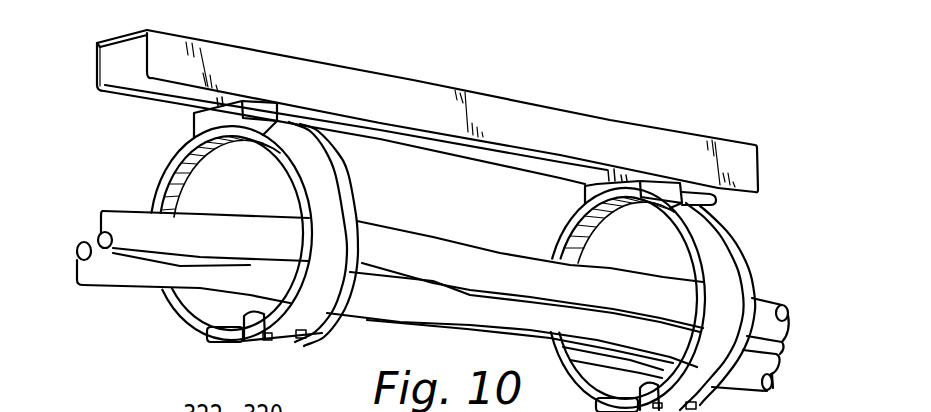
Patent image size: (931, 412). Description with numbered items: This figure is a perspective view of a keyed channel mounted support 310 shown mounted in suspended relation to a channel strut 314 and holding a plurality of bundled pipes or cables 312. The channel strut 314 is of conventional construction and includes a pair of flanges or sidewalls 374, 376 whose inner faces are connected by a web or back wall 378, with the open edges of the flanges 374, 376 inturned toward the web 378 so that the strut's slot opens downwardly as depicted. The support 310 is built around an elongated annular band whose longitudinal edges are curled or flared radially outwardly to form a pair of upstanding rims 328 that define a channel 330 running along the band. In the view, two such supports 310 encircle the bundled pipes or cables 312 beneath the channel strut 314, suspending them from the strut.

The keyed channel mounted support 310 is at (372, 193).
The bundled pipes or cables 312 is at (83, 241).
The channel strut 314 is at (403, 106).
The upstanding rims 328 is at (736, 270).
The channel 330 is at (720, 307).
The flange or sidewall 374 is at (266, 76).
The flange or sidewall 376 is at (110, 71).
The web or back wall 378 is at (132, 53).